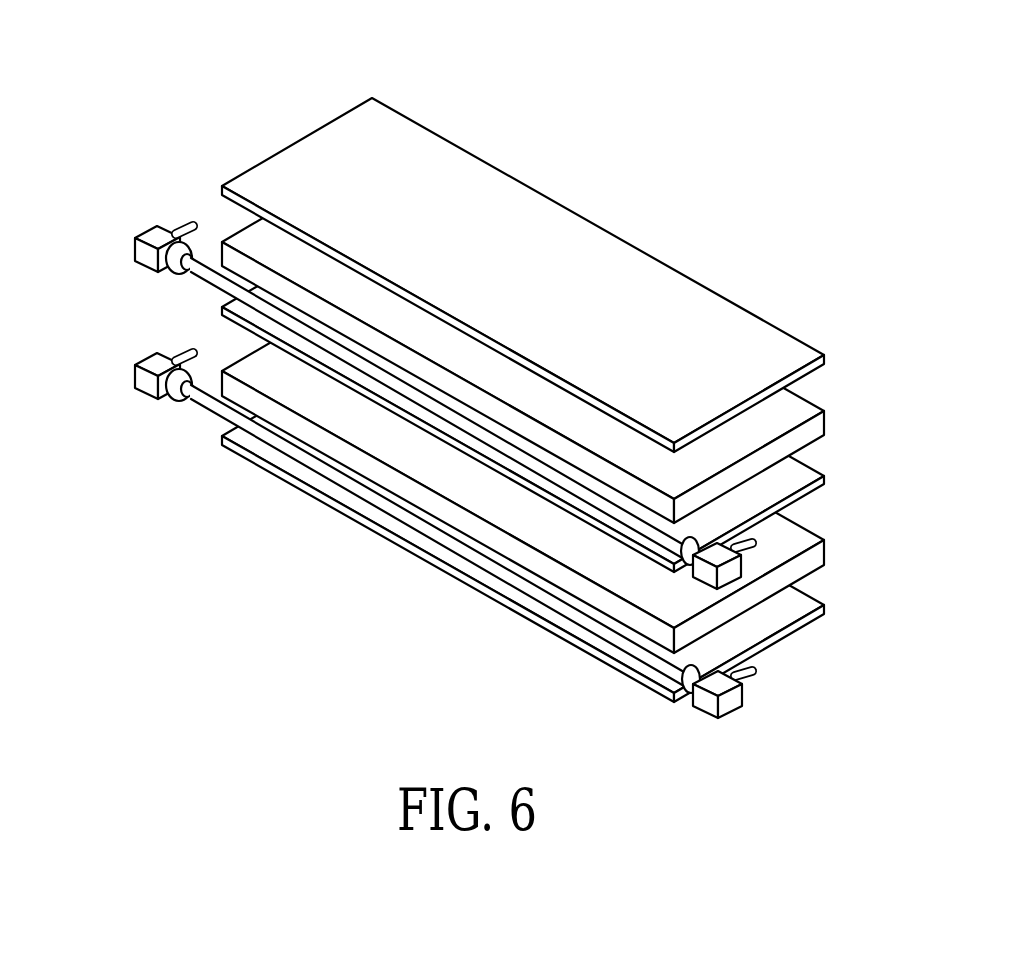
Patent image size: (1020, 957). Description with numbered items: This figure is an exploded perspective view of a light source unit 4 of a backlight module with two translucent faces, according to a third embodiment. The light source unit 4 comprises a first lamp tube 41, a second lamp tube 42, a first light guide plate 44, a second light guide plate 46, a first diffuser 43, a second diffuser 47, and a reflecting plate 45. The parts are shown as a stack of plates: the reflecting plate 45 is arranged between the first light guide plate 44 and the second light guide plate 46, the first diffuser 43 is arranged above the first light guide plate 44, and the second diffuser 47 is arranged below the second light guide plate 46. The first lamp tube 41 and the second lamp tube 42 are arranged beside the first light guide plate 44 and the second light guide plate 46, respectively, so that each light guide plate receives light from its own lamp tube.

The light source unit 4 is at (263, 138).
The first lamp tube 41 is at (140, 252).
The second lamp tube 42 is at (141, 380).
The first diffuser 43 is at (823, 362).
The first light guide plate 44 is at (823, 428).
The reflecting plate 45 is at (825, 483).
The second light guide plate 46 is at (823, 557).
The second diffuser 47 is at (823, 604).